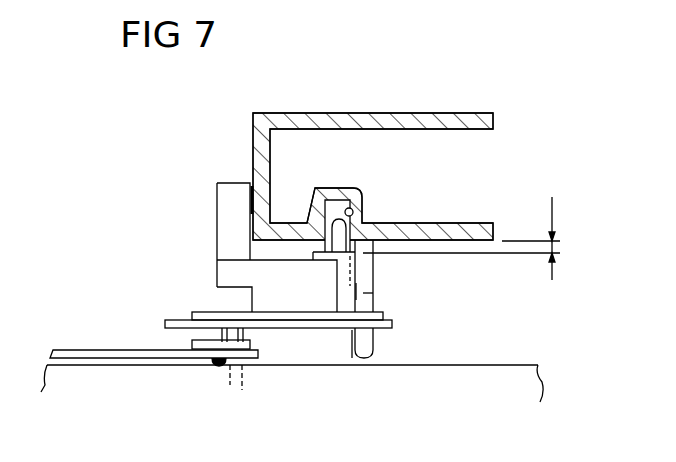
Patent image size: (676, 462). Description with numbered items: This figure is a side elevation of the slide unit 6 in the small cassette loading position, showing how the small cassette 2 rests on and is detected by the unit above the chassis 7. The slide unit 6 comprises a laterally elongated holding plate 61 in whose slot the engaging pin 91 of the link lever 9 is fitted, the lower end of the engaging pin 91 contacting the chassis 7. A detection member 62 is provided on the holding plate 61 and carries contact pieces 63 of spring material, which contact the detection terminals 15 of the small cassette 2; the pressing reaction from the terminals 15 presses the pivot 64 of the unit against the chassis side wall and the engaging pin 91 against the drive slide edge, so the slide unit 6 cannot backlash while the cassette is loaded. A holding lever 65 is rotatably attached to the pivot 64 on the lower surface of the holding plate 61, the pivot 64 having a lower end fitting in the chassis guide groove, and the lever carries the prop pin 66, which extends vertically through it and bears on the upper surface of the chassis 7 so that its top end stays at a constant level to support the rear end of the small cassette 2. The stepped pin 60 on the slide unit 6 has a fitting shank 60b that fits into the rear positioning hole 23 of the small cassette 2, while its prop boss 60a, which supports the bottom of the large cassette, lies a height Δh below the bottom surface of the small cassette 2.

The small cassette 2 is at (355, 113).
The detection terminal 15 is at (253, 206).
The contact piece 63 is at (217, 212).
The rear positioning hole 23 is at (352, 209).
The engaging pin 91 is at (207, 333).
The link lever 9 is at (105, 350).
The pivot 64 is at (228, 388).
The holding plate 61 is at (300, 312).
The detection member 62 is at (322, 293).
The slide unit 6 is at (397, 335).
The holding lever 65 is at (393, 326).
The prop pin 66 is at (363, 293).
The chassis 7 is at (498, 365).
The stepped pin 60 is at (530, 265).
The prop boss 60a is at (356, 283).
The fitting shank 60b is at (348, 222).